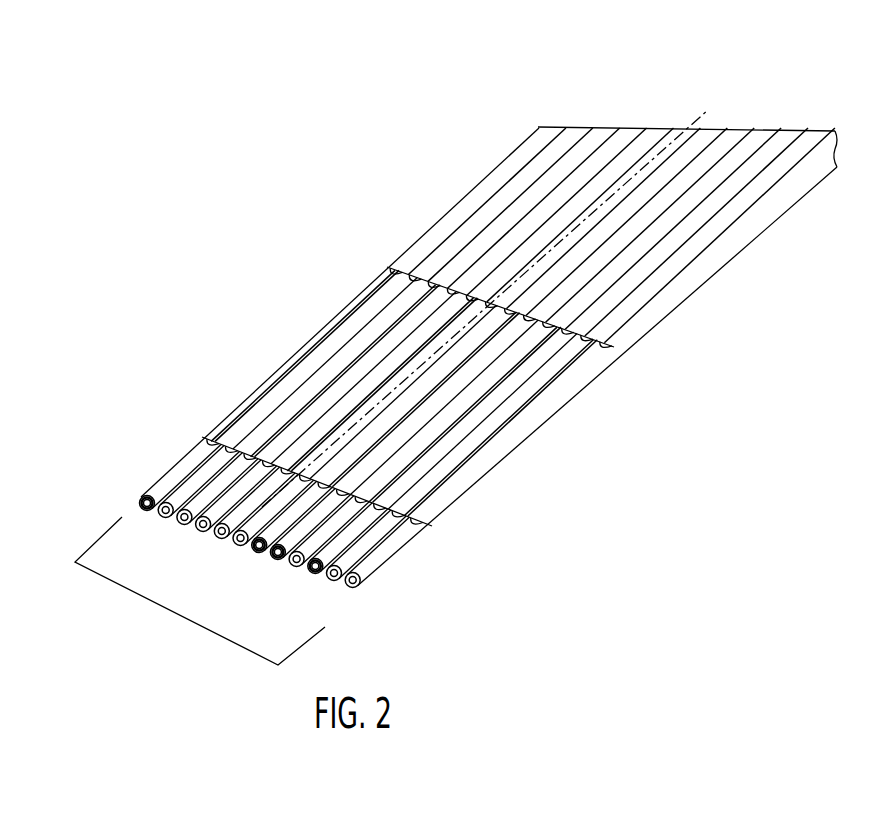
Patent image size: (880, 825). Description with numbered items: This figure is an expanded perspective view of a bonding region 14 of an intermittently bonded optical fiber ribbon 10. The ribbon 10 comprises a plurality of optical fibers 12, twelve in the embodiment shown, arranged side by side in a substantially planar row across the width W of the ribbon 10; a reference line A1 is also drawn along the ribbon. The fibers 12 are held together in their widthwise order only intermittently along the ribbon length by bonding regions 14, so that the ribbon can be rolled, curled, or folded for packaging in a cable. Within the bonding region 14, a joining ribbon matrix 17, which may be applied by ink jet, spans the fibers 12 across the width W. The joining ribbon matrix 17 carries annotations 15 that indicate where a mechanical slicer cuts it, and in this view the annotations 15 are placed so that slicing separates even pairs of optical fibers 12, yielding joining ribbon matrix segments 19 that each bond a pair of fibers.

The optical fiber ribbon 10 is at (551, 86).
The optical fibers 12 is at (140, 500).
The bonding region 14 is at (664, 421).
The annotations 15 is at (260, 377).
The joining ribbon matrix 17 is at (502, 456).
The joining ribbon matrix segments 19 is at (460, 298).
The longitudinal axis A1 is at (245, 548).
The width W is at (137, 600).